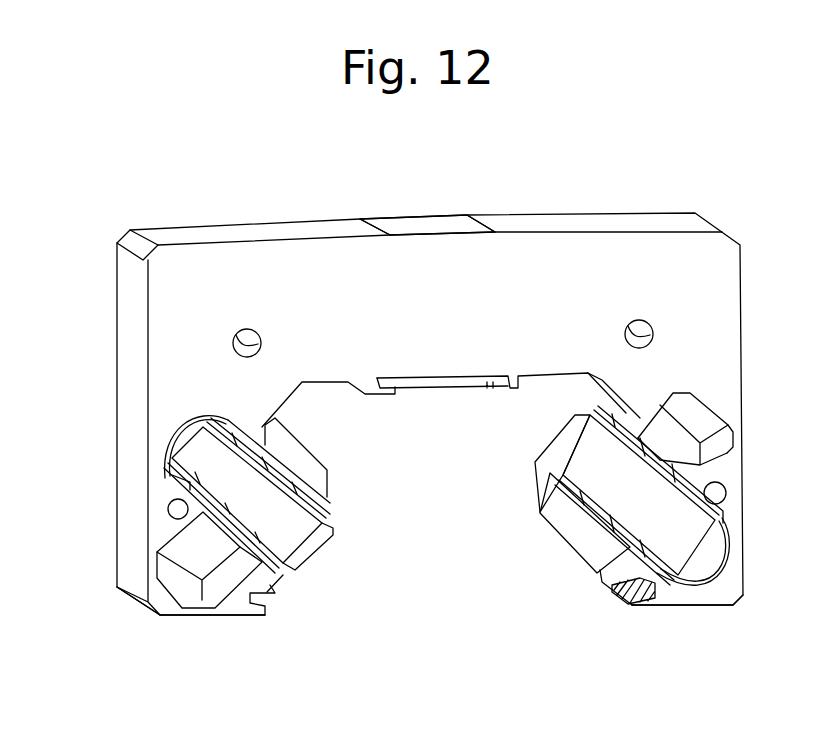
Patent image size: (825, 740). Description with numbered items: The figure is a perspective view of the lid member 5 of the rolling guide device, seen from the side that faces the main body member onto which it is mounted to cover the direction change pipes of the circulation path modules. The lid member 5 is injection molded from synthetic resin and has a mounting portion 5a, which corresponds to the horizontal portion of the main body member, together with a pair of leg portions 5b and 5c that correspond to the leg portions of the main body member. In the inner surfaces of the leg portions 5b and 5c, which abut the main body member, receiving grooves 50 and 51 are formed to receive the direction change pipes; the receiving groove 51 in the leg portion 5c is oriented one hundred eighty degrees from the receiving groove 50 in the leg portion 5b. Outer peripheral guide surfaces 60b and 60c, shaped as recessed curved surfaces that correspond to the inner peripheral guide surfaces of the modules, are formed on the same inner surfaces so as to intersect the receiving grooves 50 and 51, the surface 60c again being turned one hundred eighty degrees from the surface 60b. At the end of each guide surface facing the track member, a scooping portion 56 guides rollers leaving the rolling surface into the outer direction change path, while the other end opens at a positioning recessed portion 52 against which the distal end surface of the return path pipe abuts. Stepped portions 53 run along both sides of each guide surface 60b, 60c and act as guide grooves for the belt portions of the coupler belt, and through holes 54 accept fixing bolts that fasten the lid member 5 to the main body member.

The lid member 5 is at (689, 188).
The mounting portion 5a is at (437, 257).
The leg portion 5b is at (733, 585).
The leg portion 5c is at (160, 530).
The receiving groove 50 is at (705, 428).
The receiving groove 51 is at (190, 555).
The positioning recessed portion 52 is at (180, 430).
The stepped portion 53 is at (173, 462).
The through hole 54 is at (260, 333).
The scooping portion 56 is at (582, 430).
The outer peripheral guide surface 60b is at (578, 450).
The outer peripheral guide surface 60c is at (280, 540).